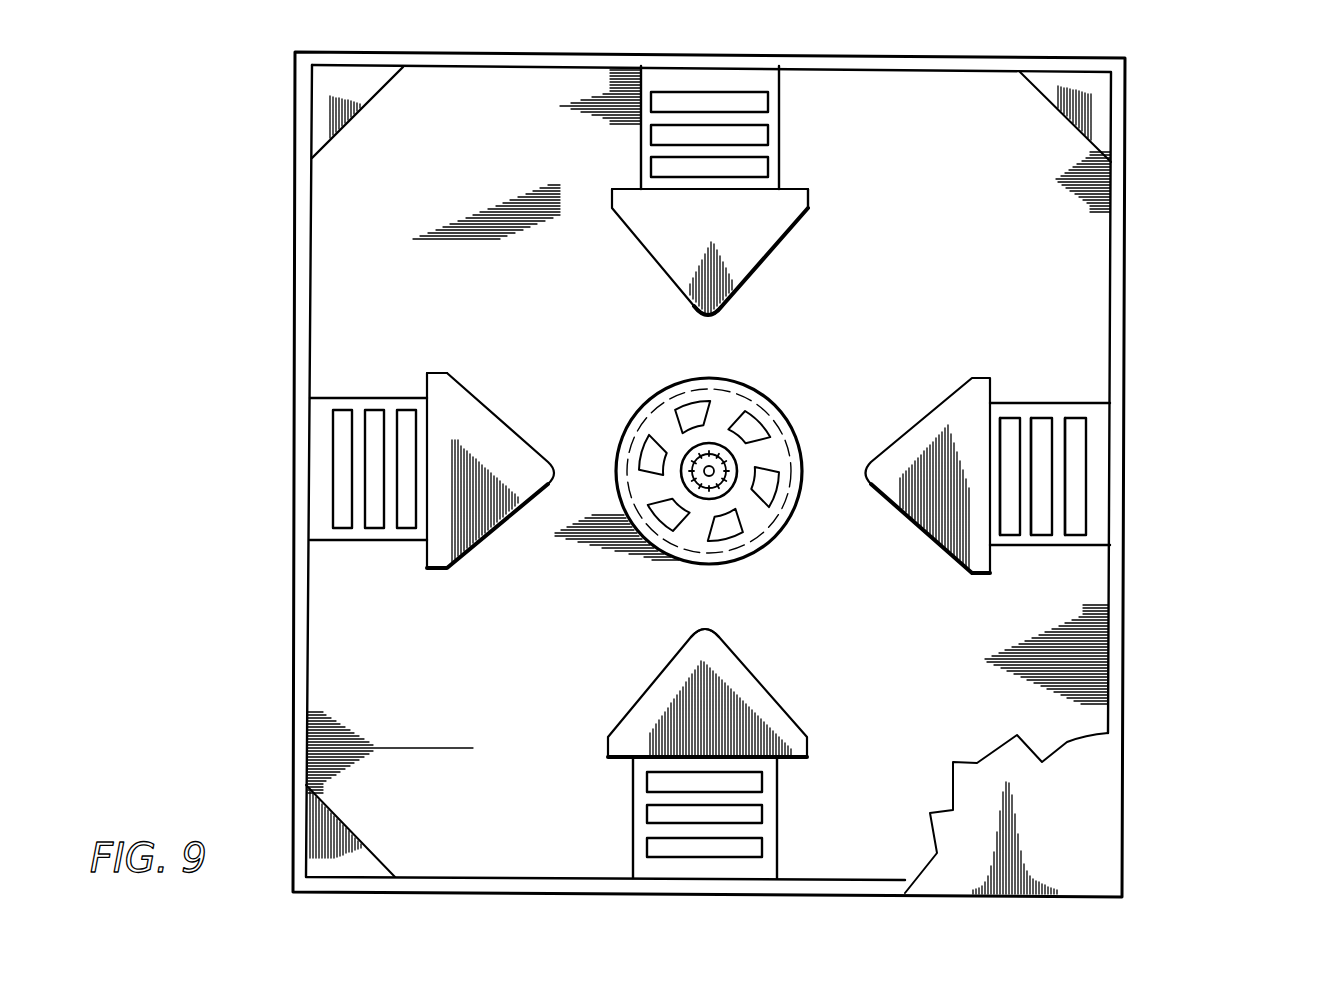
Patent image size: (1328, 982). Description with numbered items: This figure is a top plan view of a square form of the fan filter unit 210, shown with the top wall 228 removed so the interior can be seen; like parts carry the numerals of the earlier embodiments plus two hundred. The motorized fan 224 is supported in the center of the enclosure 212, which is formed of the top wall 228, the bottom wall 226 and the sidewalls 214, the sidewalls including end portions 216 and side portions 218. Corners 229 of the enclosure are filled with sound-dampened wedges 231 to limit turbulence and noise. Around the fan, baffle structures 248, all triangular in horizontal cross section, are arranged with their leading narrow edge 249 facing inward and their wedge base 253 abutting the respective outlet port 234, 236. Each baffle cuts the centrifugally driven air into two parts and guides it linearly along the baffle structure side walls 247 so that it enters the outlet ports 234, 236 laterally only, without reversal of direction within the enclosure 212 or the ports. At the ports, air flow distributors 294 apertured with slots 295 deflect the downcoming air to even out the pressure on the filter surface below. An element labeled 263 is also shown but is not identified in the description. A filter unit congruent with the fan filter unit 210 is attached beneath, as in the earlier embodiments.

The fan filter unit 210 is at (1252, 237).
The enclosure 212 is at (342, 275).
The sidewalls 214 is at (1125, 222).
The end portions 216 is at (295, 372).
The side portions 218 is at (298, 167).
The motorized fan 224 is at (743, 393).
The bottom wall 226 is at (462, 207).
The top wall 228 is at (1080, 850).
The corners 229 is at (1103, 100).
The sound-dampened wedges 231 is at (1057, 88).
The outlet port 234 is at (343, 541).
The outlet port 236 is at (633, 840).
The baffle structure side walls 247 is at (492, 535).
The baffle structures 248 is at (658, 230).
The leading narrow edge 249 is at (708, 322).
The wedge base 253 is at (810, 200).
The top vent 263 is at (778, 100).
The air flow distributor 294 is at (1097, 508).
The slots 295 is at (1043, 478).